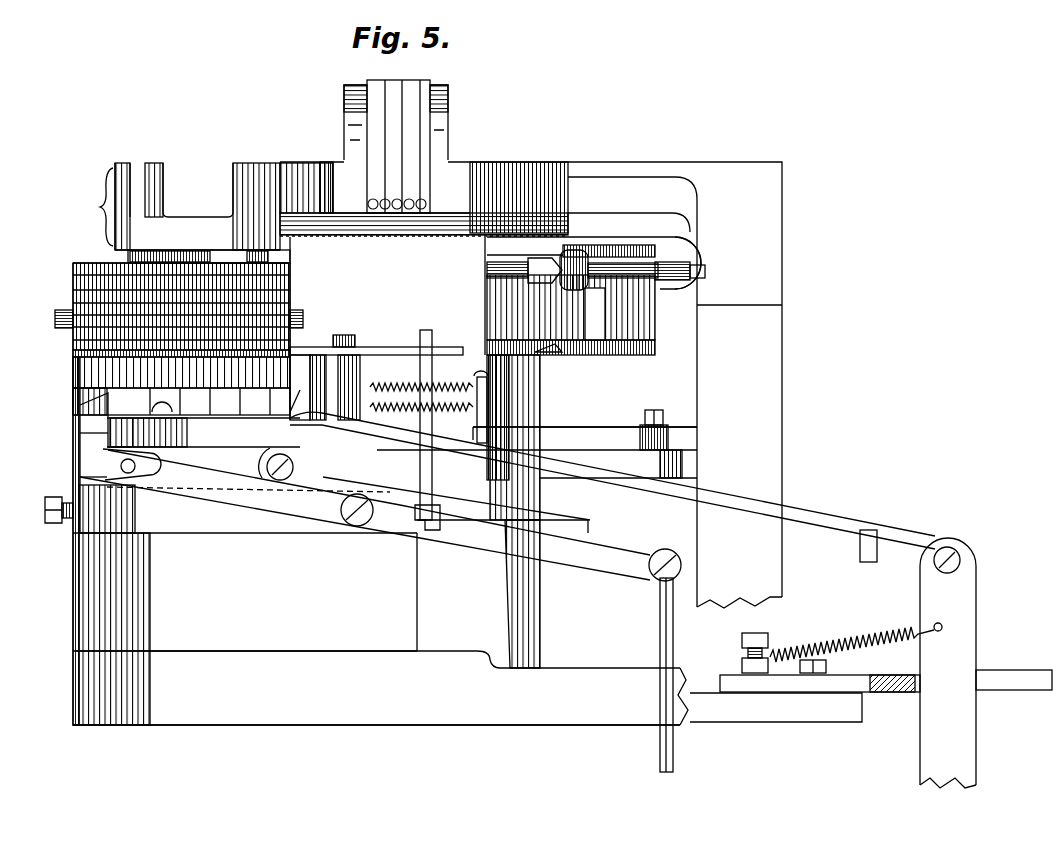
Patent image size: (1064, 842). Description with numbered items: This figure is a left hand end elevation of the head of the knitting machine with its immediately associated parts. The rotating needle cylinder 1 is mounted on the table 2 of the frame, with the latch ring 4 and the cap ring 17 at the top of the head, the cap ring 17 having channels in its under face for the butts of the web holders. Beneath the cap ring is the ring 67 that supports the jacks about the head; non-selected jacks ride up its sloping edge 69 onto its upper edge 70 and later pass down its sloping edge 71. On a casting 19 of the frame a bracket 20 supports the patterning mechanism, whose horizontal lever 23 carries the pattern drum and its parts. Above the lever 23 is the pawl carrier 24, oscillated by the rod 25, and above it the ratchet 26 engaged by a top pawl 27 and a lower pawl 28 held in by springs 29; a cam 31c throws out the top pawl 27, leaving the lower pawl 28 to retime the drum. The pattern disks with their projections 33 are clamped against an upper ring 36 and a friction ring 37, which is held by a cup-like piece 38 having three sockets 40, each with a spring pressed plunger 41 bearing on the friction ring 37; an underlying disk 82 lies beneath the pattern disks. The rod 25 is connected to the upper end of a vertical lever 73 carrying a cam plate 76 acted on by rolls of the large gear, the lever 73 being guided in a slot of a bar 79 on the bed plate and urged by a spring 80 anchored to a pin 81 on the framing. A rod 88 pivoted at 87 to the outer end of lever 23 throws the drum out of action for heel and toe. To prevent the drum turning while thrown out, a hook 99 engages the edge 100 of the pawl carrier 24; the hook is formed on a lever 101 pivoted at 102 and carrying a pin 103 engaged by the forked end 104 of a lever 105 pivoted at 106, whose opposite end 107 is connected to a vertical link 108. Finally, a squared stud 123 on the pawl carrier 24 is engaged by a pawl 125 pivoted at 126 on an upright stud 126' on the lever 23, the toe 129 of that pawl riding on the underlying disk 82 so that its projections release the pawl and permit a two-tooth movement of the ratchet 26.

The needle cylinder 1 is at (538, 514).
The table 2 is at (82, 686).
The latch ring 4 is at (508, 178).
The cap ring 17 is at (487, 250).
The casting 19 is at (80, 598).
The bracket 20 is at (82, 522).
The lever 23 is at (452, 468).
The pawl carrier 24 is at (190, 437).
The rod 25 is at (815, 528).
The ratchet 26 is at (80, 397).
The top pawl 27 is at (296, 414).
The lower pawl 28 is at (302, 412).
The springs 29 is at (390, 385).
The cam 31c is at (73, 374).
The projections 33 is at (60, 314).
The upper ring 36 is at (73, 280).
The friction ring 37 is at (73, 266).
The cup-like piece 38 is at (94, 207).
The sockets 40 is at (133, 172).
The pin or plunger 41 is at (128, 258).
The ring 67 is at (637, 356).
The sloping edge 69 is at (560, 353).
The upper edge 70 is at (640, 342).
The sloping edge 71 is at (520, 357).
The vertical lever 73 is at (965, 734).
The cam plate 76 is at (952, 550).
The bar 79 is at (1017, 672).
The spring 80 is at (832, 640).
The pin 81 is at (754, 636).
The underlying disk 82 is at (73, 354).
The pivot 87 is at (650, 414).
The rod 88 is at (640, 437).
The hook 99 is at (92, 414).
The edge 100 is at (80, 434).
The lever 101 is at (250, 465).
The pivot 102 is at (292, 466).
The pin 103 is at (82, 478).
The forked end 104 is at (110, 463).
The lever 105 is at (478, 540).
The pivot 106 is at (360, 528).
The end 107 is at (663, 556).
The vertical link 108 is at (660, 628).
The squared stud 123 is at (335, 345).
The pawl 125 is at (390, 343).
The pivot 126 is at (358, 327).
The upright stud 126' is at (385, 430).
The toe 129 is at (318, 340).